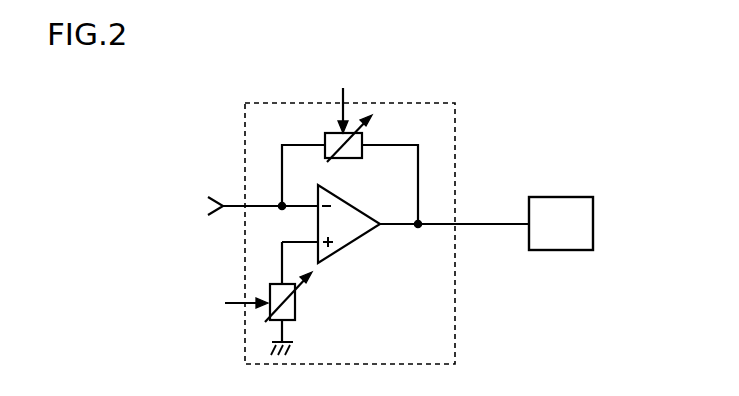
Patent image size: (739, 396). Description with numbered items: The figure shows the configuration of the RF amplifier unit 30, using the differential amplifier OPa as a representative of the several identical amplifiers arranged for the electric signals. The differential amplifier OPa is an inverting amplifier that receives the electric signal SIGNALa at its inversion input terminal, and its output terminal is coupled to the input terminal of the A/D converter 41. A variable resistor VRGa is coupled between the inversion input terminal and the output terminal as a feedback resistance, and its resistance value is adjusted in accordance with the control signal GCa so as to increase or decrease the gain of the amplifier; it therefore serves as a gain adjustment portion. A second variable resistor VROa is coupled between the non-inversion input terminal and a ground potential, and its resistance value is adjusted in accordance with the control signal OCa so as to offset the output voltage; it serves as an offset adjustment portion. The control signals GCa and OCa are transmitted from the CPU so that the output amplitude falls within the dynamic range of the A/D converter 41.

The RF amplifier unit 30 is at (429, 103).
The A/D converter 41 is at (562, 197).
The variable resistor VRGa is at (331, 160).
The variable resistor VROa is at (296, 312).
The differential amplifier OPa is at (345, 247).
The control signal GCa is at (342, 98).
The control signal OCa is at (220, 305).
The electric signal a SIGNALa is at (207, 208).